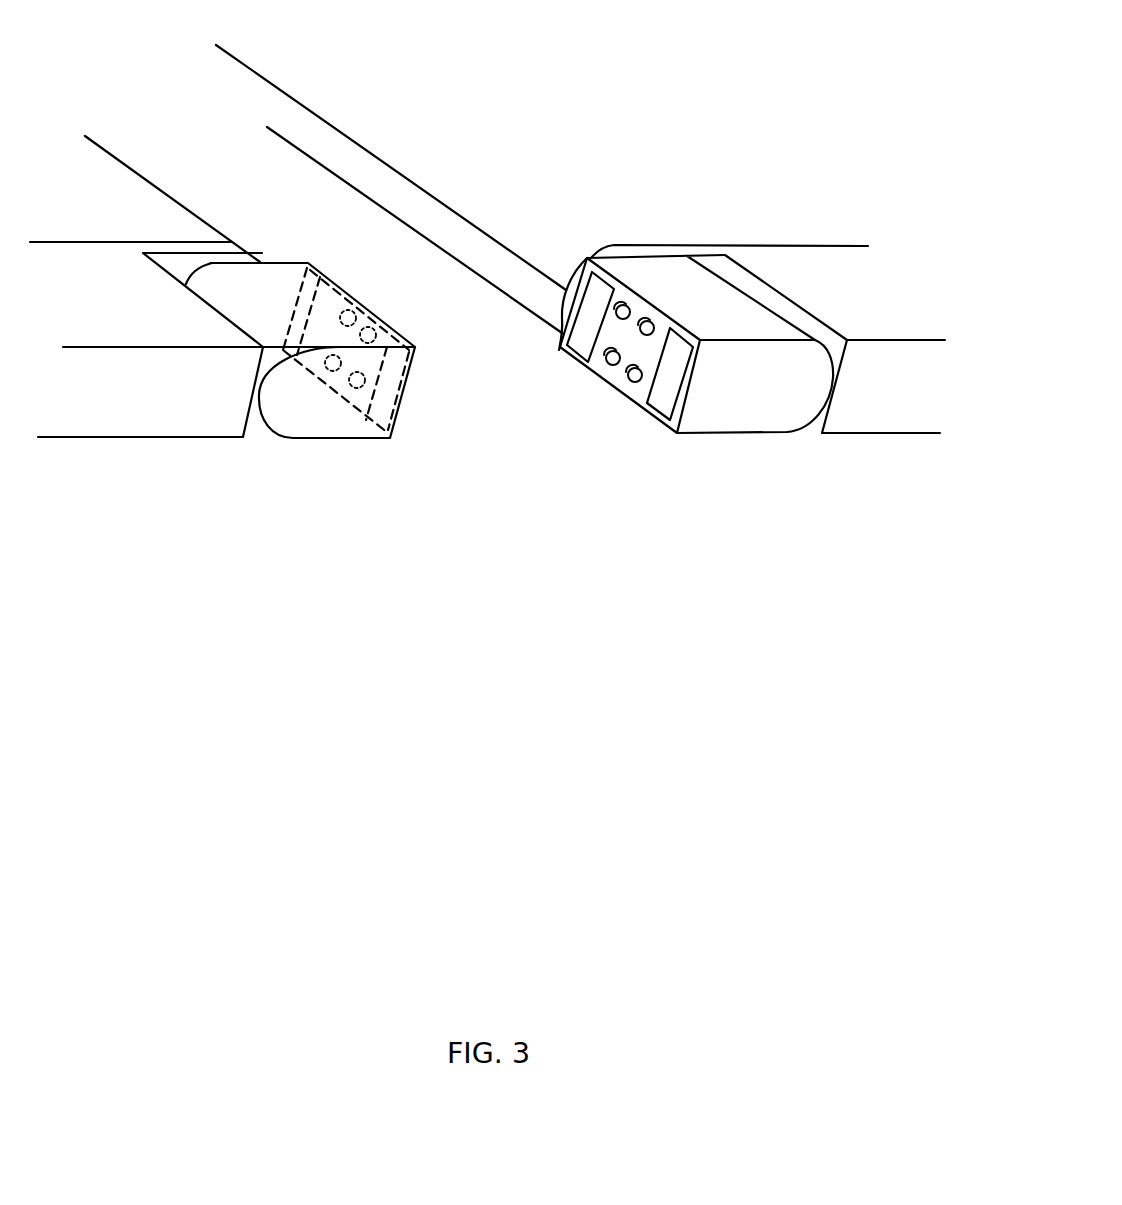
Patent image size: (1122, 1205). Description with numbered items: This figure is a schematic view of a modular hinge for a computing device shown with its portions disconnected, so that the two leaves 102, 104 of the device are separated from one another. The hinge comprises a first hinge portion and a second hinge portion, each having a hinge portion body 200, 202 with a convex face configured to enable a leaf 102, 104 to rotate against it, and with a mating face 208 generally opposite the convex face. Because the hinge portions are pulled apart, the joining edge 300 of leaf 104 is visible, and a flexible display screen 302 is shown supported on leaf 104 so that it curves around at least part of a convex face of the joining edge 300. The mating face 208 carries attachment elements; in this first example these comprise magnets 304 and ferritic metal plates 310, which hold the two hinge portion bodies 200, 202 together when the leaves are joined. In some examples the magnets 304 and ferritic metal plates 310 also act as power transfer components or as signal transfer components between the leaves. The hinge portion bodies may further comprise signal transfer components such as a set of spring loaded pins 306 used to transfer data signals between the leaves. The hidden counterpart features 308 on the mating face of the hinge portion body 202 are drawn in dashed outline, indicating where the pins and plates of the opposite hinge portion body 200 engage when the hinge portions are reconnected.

The leaf 102 is at (121, 184).
The leaf 104 is at (659, 171).
The hinge portion body 200 is at (737, 413).
The hinge portion body 202 is at (323, 423).
The mating face 208 is at (628, 394).
The joining edge 300 is at (372, 194).
The flexible display screen 302 is at (559, 266).
The magnets 304 is at (585, 346).
The spring loaded pins 306 is at (627, 305).
The pin receptacles (hidden) 308 is at (375, 333).
The ferritic metal plates 310 is at (320, 290).